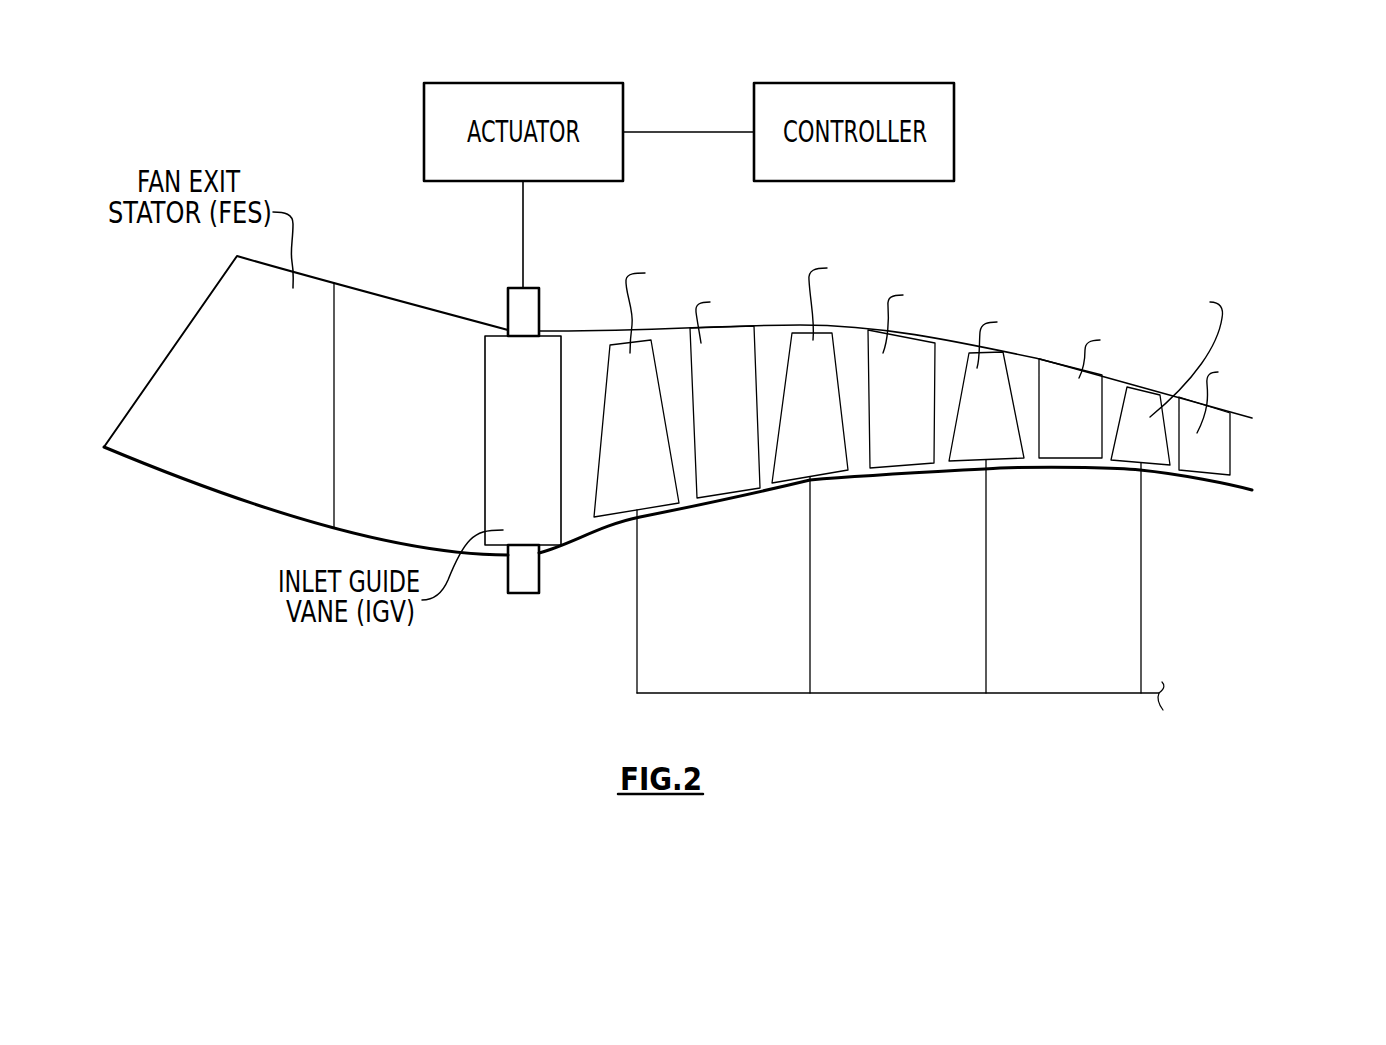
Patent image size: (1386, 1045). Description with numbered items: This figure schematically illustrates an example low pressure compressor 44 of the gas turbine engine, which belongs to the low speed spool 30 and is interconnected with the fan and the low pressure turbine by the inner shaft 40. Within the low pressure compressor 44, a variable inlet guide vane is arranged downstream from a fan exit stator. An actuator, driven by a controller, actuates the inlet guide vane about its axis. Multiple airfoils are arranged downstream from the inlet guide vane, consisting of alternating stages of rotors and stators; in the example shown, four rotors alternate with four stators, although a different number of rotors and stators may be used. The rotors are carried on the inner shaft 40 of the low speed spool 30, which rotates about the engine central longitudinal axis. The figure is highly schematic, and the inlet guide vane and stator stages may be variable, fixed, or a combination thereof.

The low speed spool 30 is at (1042, 728).
The inner shaft 40 is at (1087, 694).
The low pressure compressor 44 is at (1022, 164).